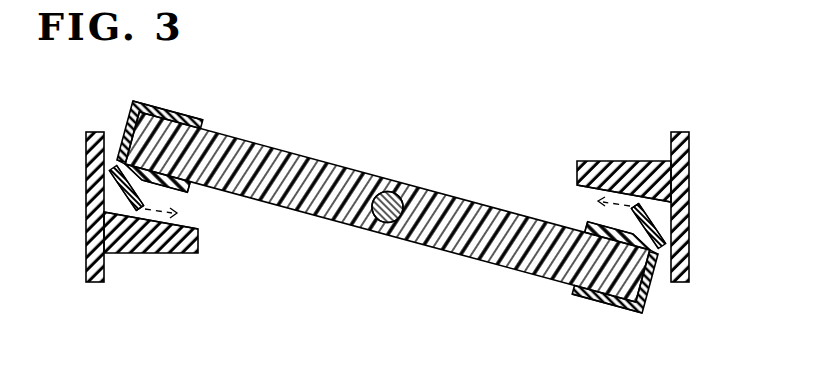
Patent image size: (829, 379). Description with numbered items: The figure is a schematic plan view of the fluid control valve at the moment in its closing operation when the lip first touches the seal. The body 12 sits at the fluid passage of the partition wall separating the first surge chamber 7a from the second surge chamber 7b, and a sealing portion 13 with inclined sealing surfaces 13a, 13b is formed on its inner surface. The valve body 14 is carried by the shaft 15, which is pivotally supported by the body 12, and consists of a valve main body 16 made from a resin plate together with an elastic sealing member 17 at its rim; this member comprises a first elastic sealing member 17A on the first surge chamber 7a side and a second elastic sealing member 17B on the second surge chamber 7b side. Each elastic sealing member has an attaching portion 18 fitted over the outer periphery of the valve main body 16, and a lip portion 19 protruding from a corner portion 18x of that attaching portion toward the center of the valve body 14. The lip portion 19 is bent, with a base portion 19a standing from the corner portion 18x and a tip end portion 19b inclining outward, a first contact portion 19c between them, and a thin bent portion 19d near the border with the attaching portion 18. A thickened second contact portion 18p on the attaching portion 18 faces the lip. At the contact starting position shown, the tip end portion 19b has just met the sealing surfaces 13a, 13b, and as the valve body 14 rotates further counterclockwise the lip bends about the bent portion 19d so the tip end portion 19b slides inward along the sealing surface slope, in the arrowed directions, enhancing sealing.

The first surge chamber 7a is at (336, 104).
The second surge chamber 7b is at (336, 298).
The body 12 is at (100, 281).
The sealing portion 13 is at (188, 253).
The sealing surface 13a is at (190, 226).
The sealing surface 13b is at (586, 190).
The valve body 14 is at (472, 170).
The shaft 15 is at (392, 192).
The valve main body 16 is at (316, 214).
The elastic sealing member 17 is at (387, 209).
The first elastic sealing member 17A is at (196, 118).
The second elastic sealing member 17B is at (579, 301).
The attaching portion 18 is at (165, 112).
The second contact portion 18p is at (147, 188).
The corner portion 18x is at (120, 160).
The lip portion 19 is at (114, 200).
The base portion 19a is at (114, 190).
The tip end portion 19b is at (130, 220).
The first contact portion 19c is at (140, 214).
The bent portion 19d is at (110, 157).